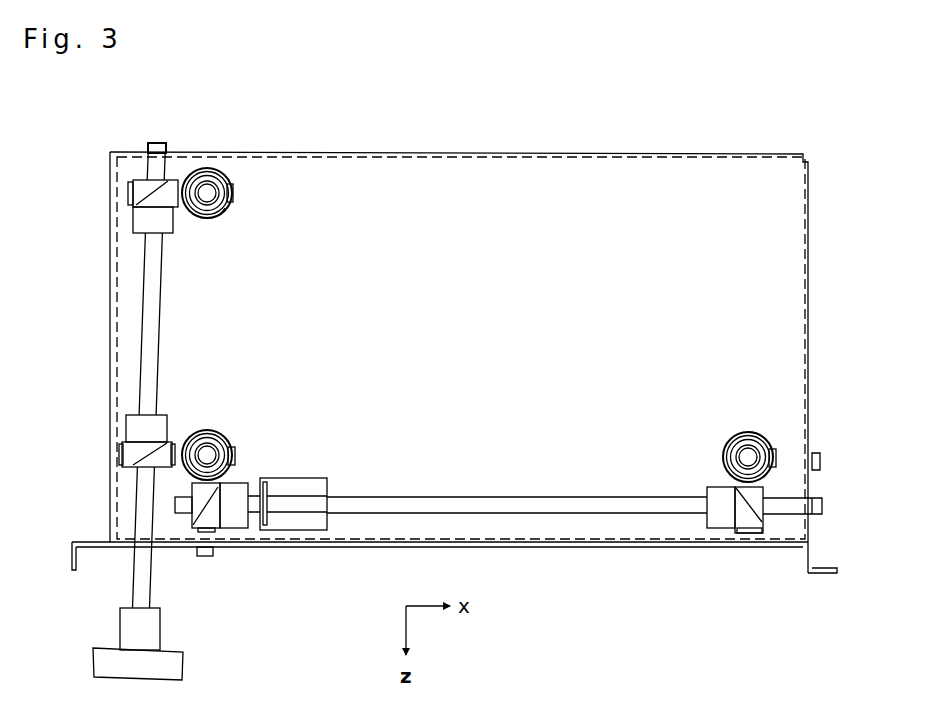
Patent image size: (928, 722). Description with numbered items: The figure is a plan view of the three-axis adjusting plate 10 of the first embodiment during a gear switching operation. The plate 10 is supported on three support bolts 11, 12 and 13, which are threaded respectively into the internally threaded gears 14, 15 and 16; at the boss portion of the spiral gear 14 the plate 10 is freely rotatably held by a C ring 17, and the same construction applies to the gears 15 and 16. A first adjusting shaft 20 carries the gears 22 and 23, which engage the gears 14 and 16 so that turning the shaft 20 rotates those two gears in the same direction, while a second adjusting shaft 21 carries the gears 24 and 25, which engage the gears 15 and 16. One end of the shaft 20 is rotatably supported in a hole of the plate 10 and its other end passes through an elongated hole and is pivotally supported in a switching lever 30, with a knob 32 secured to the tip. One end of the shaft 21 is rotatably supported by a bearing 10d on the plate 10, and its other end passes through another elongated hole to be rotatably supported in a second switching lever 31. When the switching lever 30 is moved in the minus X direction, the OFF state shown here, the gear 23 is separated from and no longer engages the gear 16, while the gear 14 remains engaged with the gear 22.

The three-axis adjusting plate 10 is at (327, 153).
The bearing 10d is at (277, 490).
The support bolt 11 is at (208, 218).
The support bolt 12 is at (730, 433).
The support bolt 13 is at (203, 430).
The gear 14 is at (232, 184).
The gear 15 is at (768, 437).
The gear 16 is at (226, 437).
The C ring 17 is at (233, 202).
The shaft 20 is at (140, 327).
The shaft 21 is at (520, 513).
The gear 22 is at (130, 193).
The gear 23 is at (120, 453).
The gear 24 is at (750, 533).
The gear 25 is at (213, 541).
The switching lever 30 is at (78, 558).
The switching lever 31 is at (818, 578).
The knob 32 is at (183, 663).